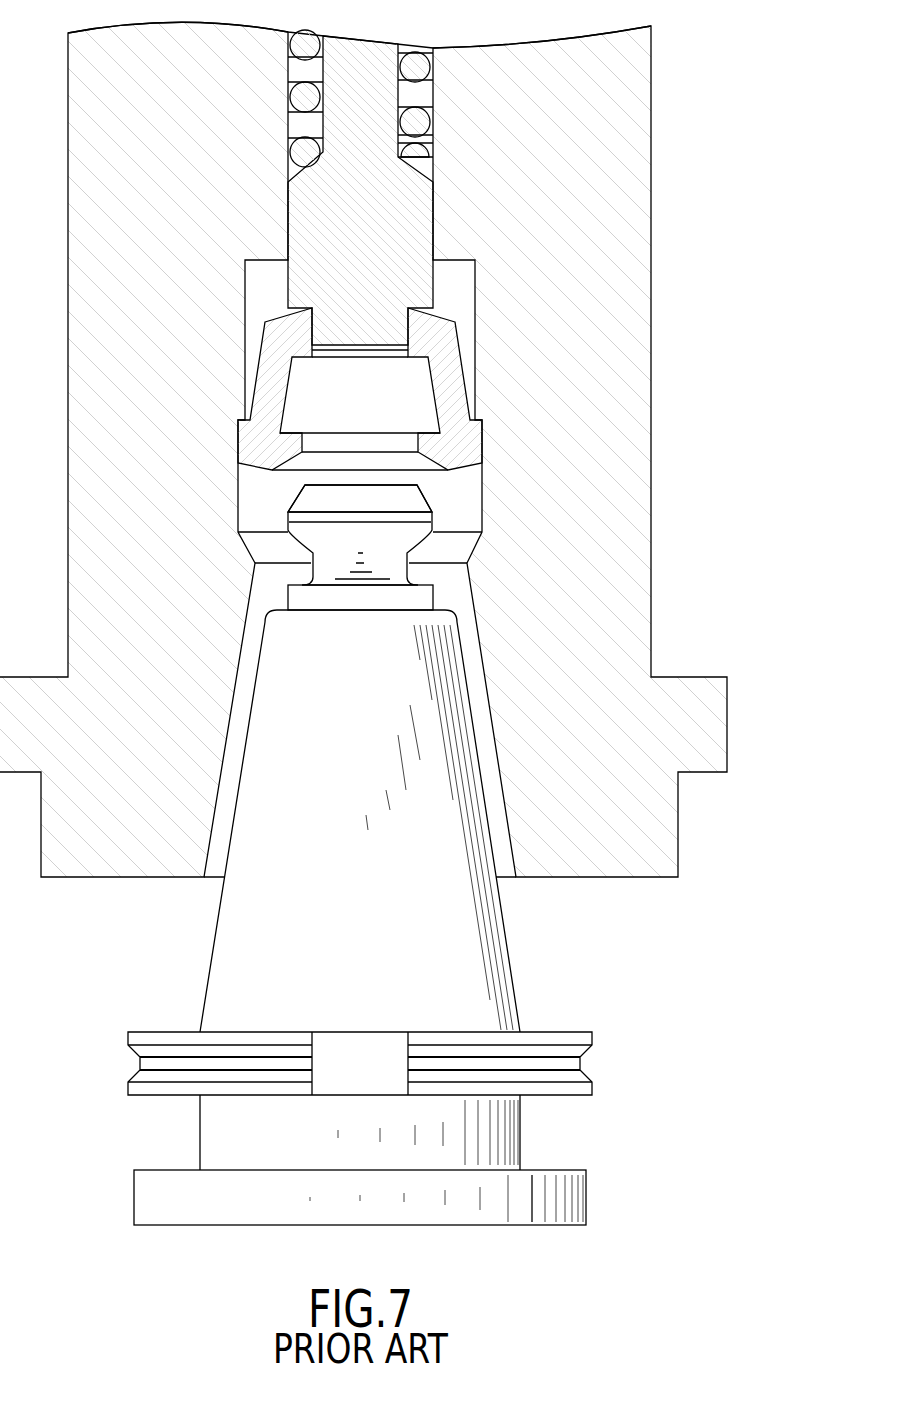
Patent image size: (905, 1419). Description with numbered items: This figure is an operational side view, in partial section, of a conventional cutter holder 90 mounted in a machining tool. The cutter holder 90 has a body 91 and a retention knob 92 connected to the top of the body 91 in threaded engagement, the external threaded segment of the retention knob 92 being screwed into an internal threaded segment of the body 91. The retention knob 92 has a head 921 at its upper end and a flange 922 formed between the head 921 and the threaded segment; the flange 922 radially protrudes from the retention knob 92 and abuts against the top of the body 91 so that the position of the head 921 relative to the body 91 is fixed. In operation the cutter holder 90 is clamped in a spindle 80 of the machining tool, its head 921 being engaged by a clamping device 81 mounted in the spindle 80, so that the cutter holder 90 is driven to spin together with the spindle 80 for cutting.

The spindle 80 is at (678, 227).
The clamping device 81 is at (450, 363).
The cutter holder 90 is at (535, 942).
The body 91 is at (224, 946).
The retention knob 92 is at (438, 513).
The head 921 is at (303, 500).
The flange 922 is at (298, 598).